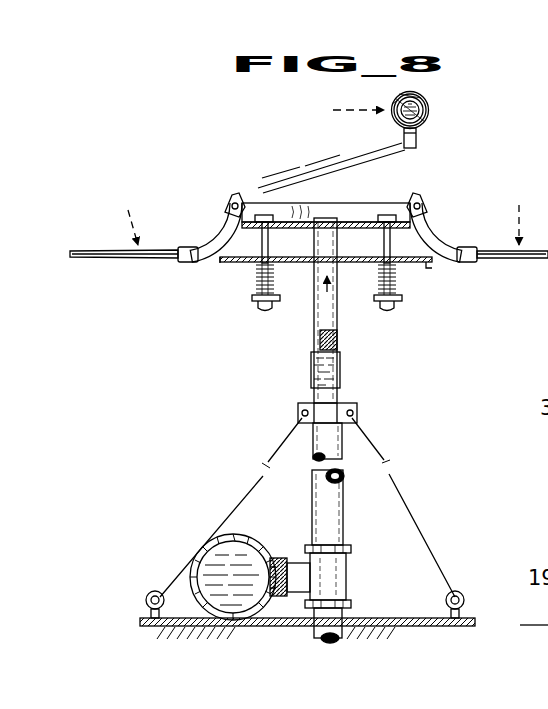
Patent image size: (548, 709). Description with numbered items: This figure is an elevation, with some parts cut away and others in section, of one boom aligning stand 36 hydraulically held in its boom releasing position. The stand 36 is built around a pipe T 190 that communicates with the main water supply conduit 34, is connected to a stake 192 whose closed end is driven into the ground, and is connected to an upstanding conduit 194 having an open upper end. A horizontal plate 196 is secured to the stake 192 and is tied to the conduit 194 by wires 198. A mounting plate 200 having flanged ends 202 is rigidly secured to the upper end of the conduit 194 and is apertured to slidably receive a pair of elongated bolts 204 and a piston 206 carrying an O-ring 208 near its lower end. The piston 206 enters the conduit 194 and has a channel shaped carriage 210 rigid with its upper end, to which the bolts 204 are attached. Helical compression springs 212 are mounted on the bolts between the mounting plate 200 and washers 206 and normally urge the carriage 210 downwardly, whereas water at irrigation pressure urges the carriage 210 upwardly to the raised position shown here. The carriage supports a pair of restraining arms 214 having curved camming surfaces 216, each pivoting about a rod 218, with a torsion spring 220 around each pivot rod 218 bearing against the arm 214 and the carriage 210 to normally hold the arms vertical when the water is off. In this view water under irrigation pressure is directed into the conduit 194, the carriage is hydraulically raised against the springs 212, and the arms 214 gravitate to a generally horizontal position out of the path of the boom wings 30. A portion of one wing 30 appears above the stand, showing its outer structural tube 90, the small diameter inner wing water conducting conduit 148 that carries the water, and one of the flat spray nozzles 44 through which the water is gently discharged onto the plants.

The wing 30 is at (433, 101).
The outer structural tube 90 is at (393, 103).
The inner wing water conducting conduit 148 is at (426, 117).
The flat spray nozzle 44 is at (418, 146).
The torsion spring 220 is at (243, 204).
The elongated bolt 204 is at (268, 214).
The channel shaped carriage 210 is at (358, 203).
The pivot rod 218 is at (230, 212).
The flanged end 202 is at (216, 257).
The curved camming surface 216 is at (190, 263).
The restraining arm 214 is at (533, 265).
The mounting plate 200 is at (425, 264).
The helical compression spring 212 is at (260, 289).
The piston 206 is at (422, 326).
The O-ring 208 is at (323, 336).
The boom aligning stand 36 is at (262, 446).
The upstanding conduit 194 is at (344, 480).
The wire 198 is at (222, 514).
The main water supply conduit 34 is at (263, 541).
The pipe T 190 is at (350, 570).
The horizontal plate 196 is at (400, 618).
The stake 192 is at (312, 637).